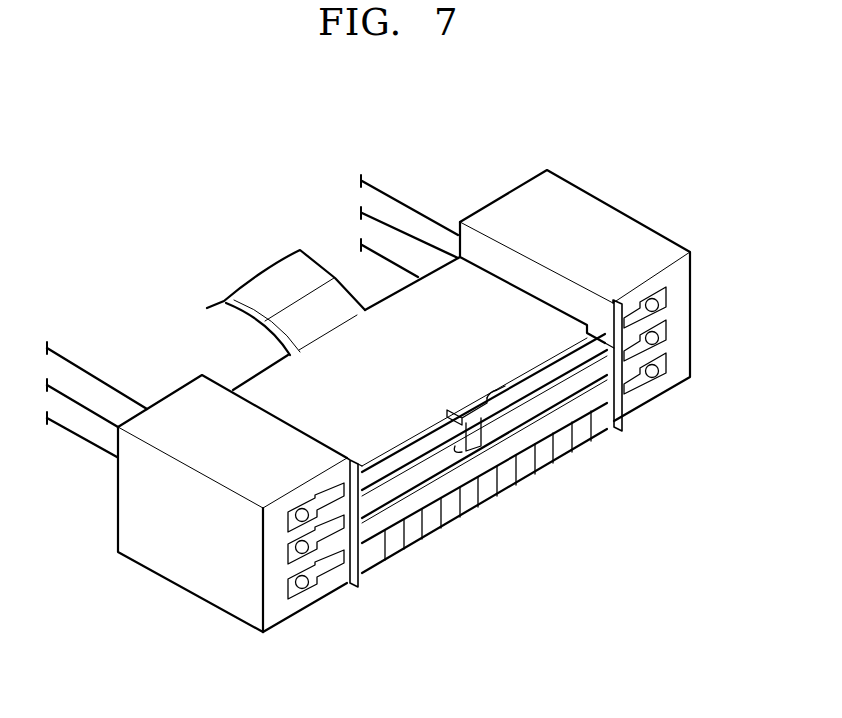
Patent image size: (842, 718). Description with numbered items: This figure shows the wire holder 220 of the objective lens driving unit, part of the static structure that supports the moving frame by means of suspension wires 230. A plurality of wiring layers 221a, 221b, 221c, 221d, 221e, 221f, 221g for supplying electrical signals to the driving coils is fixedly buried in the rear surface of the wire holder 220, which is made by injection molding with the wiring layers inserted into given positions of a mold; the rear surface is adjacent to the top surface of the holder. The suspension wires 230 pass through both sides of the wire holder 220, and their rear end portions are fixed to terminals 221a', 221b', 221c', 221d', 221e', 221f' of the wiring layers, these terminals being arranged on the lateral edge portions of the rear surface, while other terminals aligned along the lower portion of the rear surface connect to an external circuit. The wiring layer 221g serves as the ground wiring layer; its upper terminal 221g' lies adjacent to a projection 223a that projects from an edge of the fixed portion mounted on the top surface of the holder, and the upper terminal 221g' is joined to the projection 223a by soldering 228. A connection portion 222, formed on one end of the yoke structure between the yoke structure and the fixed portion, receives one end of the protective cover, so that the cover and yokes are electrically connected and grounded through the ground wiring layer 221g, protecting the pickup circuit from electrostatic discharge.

The wire holder 220 is at (608, 195).
The wiring layer 221a is at (373, 589).
The wiring layer 221b is at (428, 559).
The wiring layer 221c is at (484, 560).
The wiring layer 221d is at (566, 516).
The wiring layer 221e is at (587, 470).
The wiring layer 221f is at (641, 469).
The ground wiring layer 221g is at (509, 509).
The terminal 221a' is at (283, 622).
The terminal 221b' is at (243, 591).
The terminal 221c' is at (220, 551).
The terminal 221d' is at (703, 307).
The terminal 221e' is at (703, 340).
The terminal 221f' is at (701, 382).
The upper terminal 221g' is at (421, 415).
The connection portion 222 is at (277, 285).
The projection 223a is at (458, 412).
The soldering 228 is at (492, 404).
The suspension wires 230 is at (415, 255).